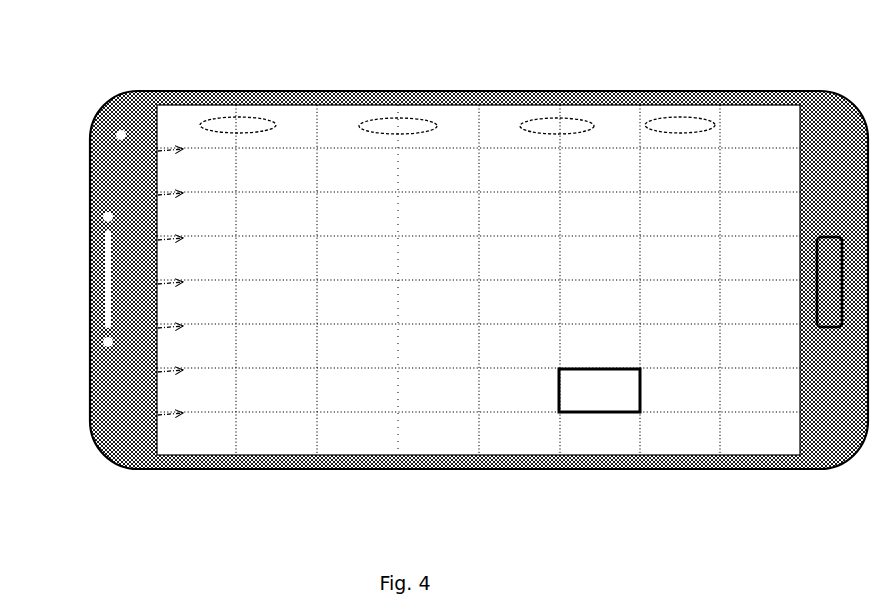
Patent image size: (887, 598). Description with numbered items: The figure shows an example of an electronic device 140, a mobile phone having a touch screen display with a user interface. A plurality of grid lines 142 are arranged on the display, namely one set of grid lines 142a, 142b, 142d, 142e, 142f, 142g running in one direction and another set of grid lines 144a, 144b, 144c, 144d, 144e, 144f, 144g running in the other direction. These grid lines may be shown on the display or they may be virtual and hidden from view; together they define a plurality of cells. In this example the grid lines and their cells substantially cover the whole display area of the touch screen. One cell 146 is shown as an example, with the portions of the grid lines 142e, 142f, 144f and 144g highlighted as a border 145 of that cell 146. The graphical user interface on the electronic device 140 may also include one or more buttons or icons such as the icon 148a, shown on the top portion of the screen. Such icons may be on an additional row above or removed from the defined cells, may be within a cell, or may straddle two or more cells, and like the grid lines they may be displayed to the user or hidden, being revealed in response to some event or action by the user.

The electronic device 140 is at (108, 80).
The grid lines 142 is at (394, 110).
The grid line 142a is at (231, 110).
The grid line 142b is at (312, 110).
The grid line 142d is at (475, 110).
The grid line 142e is at (555, 110).
The grid line 142f is at (635, 110).
The grid line 142g is at (717, 110).
The grid line 144a is at (90, 132).
The grid line 144b is at (90, 175).
The grid line 144c is at (90, 222).
The grid line 144d is at (90, 264).
The grid line 144e is at (90, 309).
The grid line 144f is at (90, 352).
The grid line 144g is at (90, 395).
The border 145 is at (592, 418).
The cell 146 is at (622, 398).
The button/icon 148a is at (703, 138).